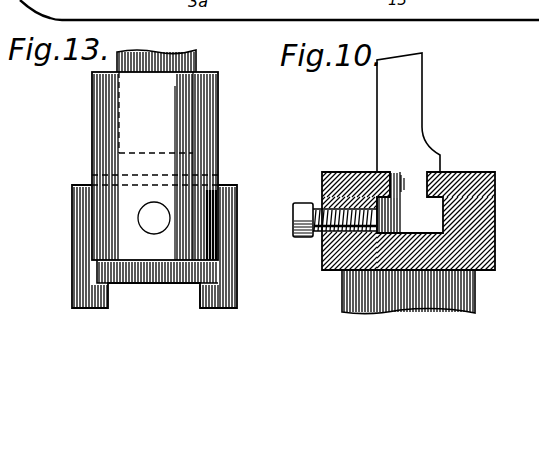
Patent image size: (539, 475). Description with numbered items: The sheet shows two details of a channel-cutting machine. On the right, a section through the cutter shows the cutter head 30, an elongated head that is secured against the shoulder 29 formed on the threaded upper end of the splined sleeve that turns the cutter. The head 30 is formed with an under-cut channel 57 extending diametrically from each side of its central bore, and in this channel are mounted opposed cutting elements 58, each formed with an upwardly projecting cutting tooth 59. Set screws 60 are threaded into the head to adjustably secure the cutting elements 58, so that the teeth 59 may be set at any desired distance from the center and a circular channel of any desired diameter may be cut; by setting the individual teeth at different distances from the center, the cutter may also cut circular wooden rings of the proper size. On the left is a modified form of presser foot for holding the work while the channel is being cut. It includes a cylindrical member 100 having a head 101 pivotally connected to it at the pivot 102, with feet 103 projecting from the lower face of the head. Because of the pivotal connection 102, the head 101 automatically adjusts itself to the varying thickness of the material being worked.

In FIG. 10, the shoulder 29 is at (463, 288).
In FIG. 10, the cutter head 30 is at (495, 250).
In FIG. 10, the under-cut channel 57 is at (443, 203).
In FIG. 10, the cutting elements 58 is at (400, 202).
In FIG. 10, the cutting teeth 59 is at (405, 102).
In FIG. 10, the set screws 60 is at (303, 208).
In FIG. 13, the cylindrical member 100 is at (218, 122).
In FIG. 13, the head 101 is at (72, 222).
In FIG. 13, the pivotal connection 102 is at (151, 222).
In FIG. 13, the feet 103 is at (82, 298).